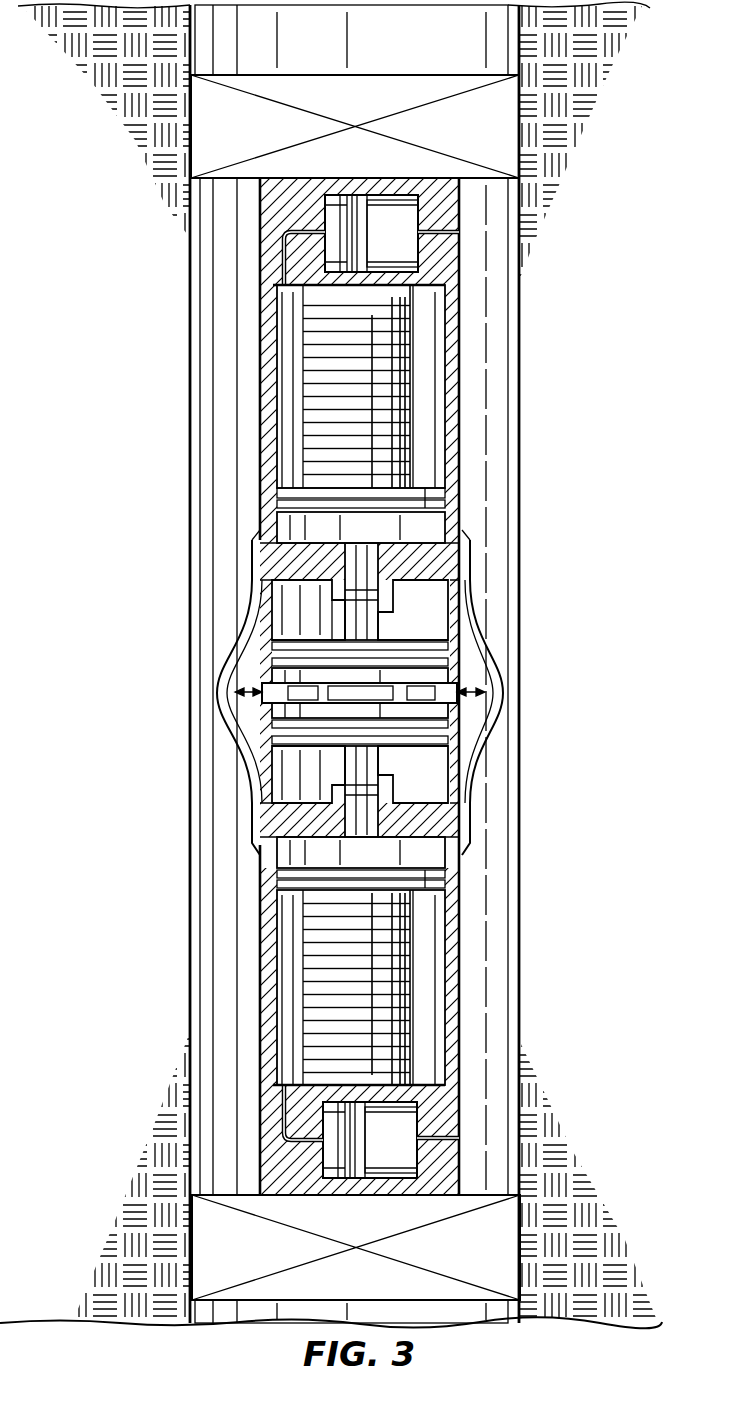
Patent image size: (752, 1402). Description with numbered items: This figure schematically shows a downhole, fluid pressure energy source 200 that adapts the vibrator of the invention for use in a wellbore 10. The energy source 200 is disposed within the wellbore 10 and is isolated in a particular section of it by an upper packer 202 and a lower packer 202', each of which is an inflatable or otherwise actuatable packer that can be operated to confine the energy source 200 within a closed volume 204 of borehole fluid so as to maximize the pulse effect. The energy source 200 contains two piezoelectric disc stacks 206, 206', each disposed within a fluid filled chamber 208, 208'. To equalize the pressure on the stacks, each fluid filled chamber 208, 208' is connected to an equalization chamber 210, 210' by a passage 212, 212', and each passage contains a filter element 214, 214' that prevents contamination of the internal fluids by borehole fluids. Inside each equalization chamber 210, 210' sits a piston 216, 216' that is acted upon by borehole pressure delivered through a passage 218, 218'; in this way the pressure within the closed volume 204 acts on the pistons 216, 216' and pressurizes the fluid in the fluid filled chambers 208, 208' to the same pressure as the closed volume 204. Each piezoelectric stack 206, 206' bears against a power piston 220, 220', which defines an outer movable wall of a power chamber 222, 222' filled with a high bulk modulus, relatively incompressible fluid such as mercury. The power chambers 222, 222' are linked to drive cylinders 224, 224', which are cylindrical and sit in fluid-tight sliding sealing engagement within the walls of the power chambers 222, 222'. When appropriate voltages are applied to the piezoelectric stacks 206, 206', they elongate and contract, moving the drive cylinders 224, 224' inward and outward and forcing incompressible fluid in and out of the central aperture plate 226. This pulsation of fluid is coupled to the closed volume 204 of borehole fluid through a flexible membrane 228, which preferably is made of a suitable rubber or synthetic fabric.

The wellbore 10 is at (522, 315).
The fluid pressure energy source 200 is at (496, 292).
The packer 202 is at (406, 126).
The packer 202' is at (420, 1235).
The closed volume 204 is at (490, 458).
The piezoelectric disc stack 206 is at (432, 386).
The piezoelectric disc stack 206' is at (440, 987).
The fluid filled chamber 208 is at (447, 386).
The fluid filled chamber 208' is at (455, 987).
The equalization chamber 210 is at (371, 208).
The equalization chamber 210' is at (370, 1170).
The passage 212 is at (204, 265).
The passage 212' is at (193, 1126).
The filter element 214 is at (284, 204).
The filter element 214' is at (317, 1157).
The piston 216 is at (424, 197).
The piston 216' is at (431, 1177).
The passage 218 is at (505, 233).
The passage 218' is at (517, 1115).
The power piston 220 is at (434, 491).
The power piston 220' is at (437, 881).
The power chamber 222 is at (434, 527).
The power chamber 222' is at (437, 844).
The drive cylinder 224 is at (360, 591).
The drive cylinder 224' is at (361, 791).
The aperture plate 226 is at (440, 673).
The flexible membrane 228 is at (503, 697).